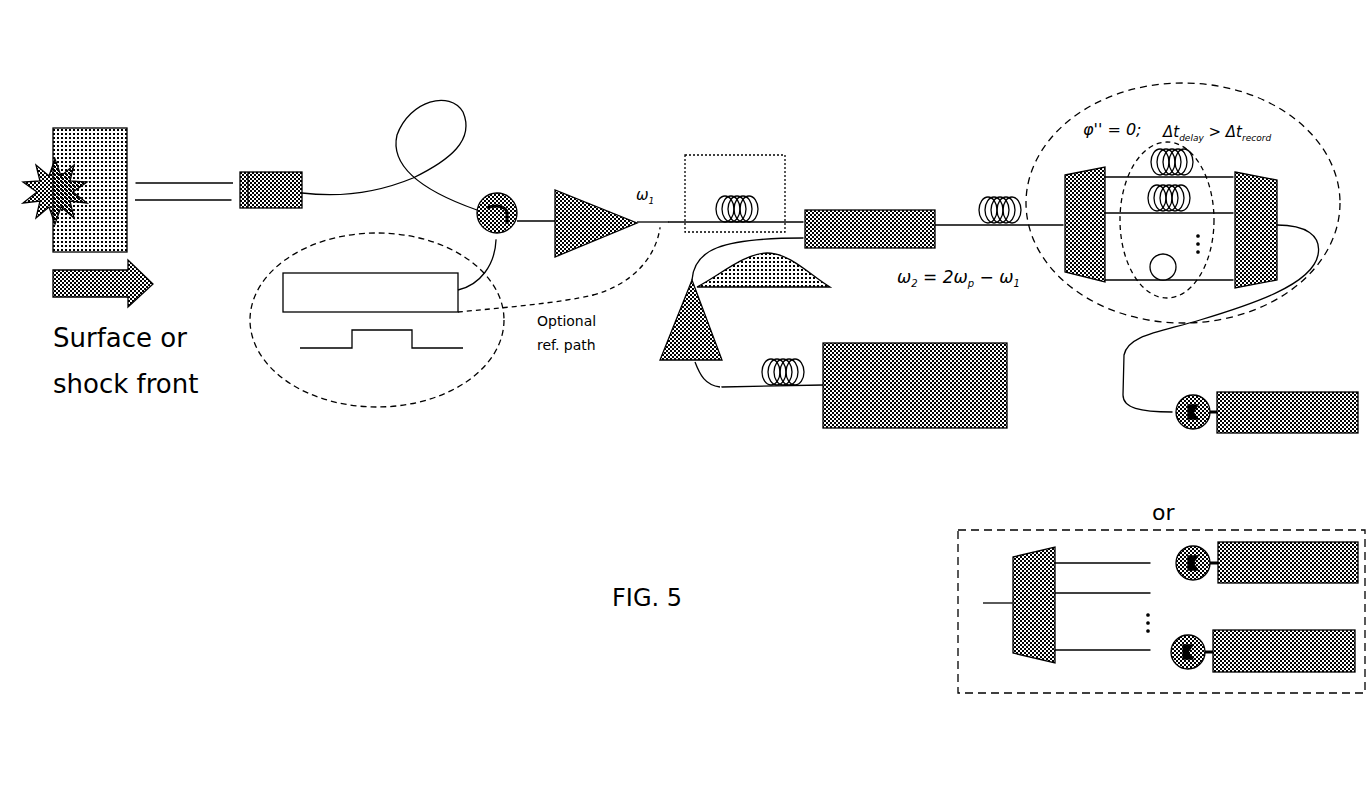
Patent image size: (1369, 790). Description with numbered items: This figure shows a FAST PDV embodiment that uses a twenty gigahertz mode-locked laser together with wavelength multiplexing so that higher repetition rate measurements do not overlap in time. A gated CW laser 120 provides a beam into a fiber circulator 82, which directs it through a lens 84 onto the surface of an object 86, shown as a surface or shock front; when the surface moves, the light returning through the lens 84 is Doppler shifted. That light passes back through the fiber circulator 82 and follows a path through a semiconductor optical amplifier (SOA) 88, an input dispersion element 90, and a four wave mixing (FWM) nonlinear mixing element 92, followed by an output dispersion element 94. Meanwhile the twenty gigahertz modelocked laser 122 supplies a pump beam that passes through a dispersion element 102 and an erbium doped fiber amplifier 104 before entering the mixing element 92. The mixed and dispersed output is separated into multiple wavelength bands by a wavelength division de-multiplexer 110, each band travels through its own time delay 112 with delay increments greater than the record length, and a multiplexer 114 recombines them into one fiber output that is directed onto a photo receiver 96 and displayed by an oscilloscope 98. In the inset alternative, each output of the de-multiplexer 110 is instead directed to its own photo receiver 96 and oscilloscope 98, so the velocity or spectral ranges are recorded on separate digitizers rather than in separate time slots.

The fiber circulator 82 is at (497, 193).
The lens 84 is at (240, 172).
The object 86 is at (86, 128).
The semiconductor optical amplifier (SOA) 88 is at (597, 185).
The input dispersion element 90 is at (718, 198).
The four wave mixing (FWM) nonlinear mixing element 92 is at (937, 210).
The output dispersion element 94 is at (980, 203).
The photo receiver (detector) 96 is at (1180, 396).
The oscilloscope (digitizer) 98 is at (1312, 392).
The dispersion element 102 is at (760, 372).
The erbium doped fiber amplifier (EDFA) 104 is at (672, 360).
The wavelength division de-multiplexer 110 is at (1083, 167).
The time delay 112 is at (1157, 140).
The multiplexer 114 is at (1265, 172).
The gated CW laser 120 is at (362, 273).
The 20 GHz modelocked laser 122 is at (877, 428).